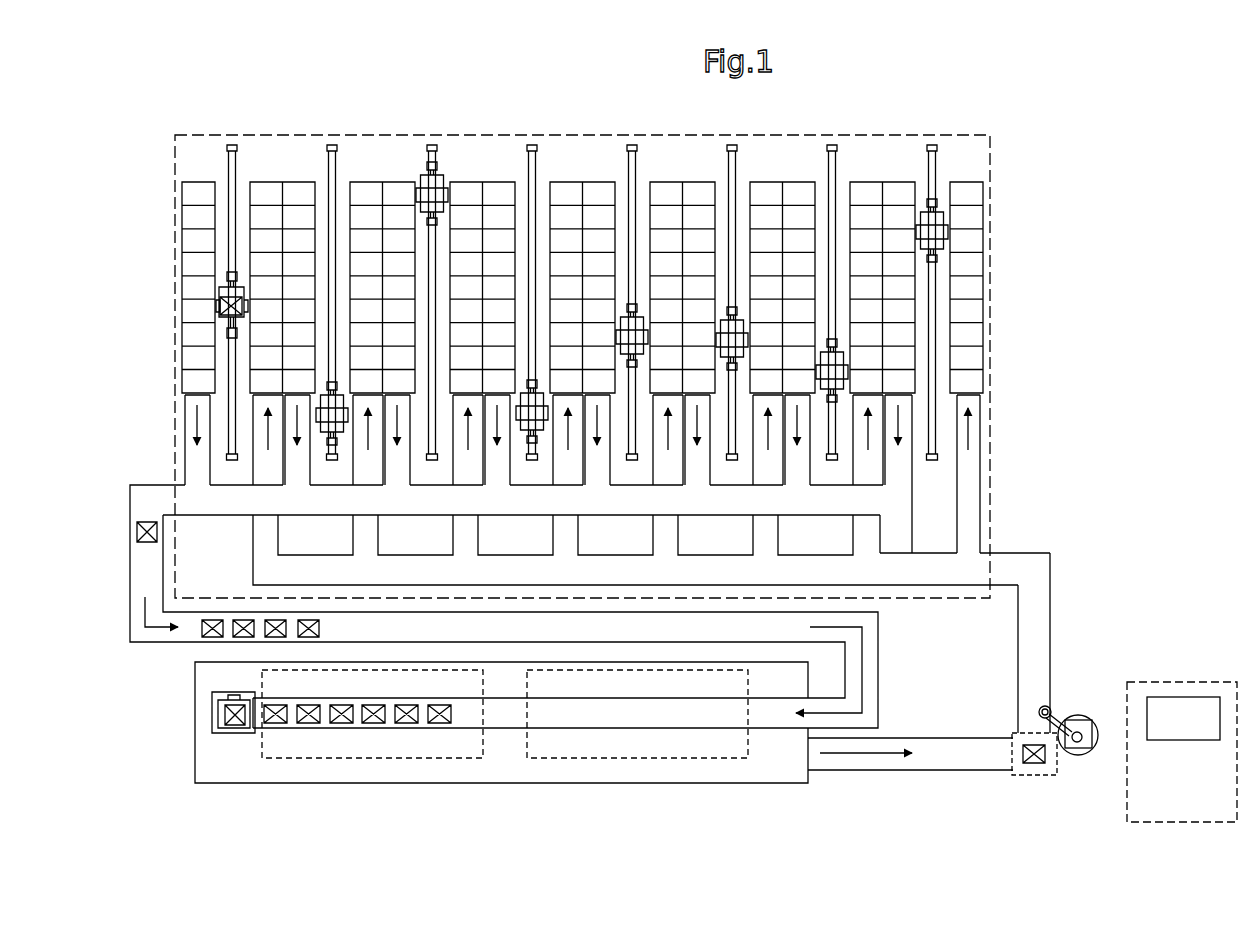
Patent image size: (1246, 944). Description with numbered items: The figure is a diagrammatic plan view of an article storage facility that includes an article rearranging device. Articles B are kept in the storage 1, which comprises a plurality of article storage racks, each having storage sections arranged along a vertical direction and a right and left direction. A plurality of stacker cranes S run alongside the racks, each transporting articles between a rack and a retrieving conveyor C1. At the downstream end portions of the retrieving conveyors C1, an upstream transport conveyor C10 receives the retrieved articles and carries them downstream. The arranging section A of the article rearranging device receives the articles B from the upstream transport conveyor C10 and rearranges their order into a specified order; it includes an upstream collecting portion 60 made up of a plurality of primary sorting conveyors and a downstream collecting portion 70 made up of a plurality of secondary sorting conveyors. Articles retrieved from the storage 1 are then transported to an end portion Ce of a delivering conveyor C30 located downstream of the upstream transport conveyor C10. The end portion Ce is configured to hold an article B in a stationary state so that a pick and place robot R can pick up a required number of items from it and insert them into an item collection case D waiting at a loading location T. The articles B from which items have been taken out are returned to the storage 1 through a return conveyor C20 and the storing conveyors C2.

The storage 1 is at (668, 135).
The stacker crane S is at (448, 170).
The article B is at (228, 313).
The retrieving conveyor C1 is at (183, 438).
The storing conveyor C2 is at (253, 462).
The upstream transport conveyor C10 is at (170, 480).
The return conveyor C20 is at (1015, 553).
The delivering conveyor C30 is at (870, 770).
The end portion of delivering conveyor Ce is at (1012, 762).
The pick and place robot R is at (1085, 718).
The item collection case D is at (1185, 708).
The loading location T is at (1122, 790).
The arranging section A is at (262, 785).
The upstream collecting portion 60 is at (357, 760).
The downstream collecting portion 70 is at (580, 758).